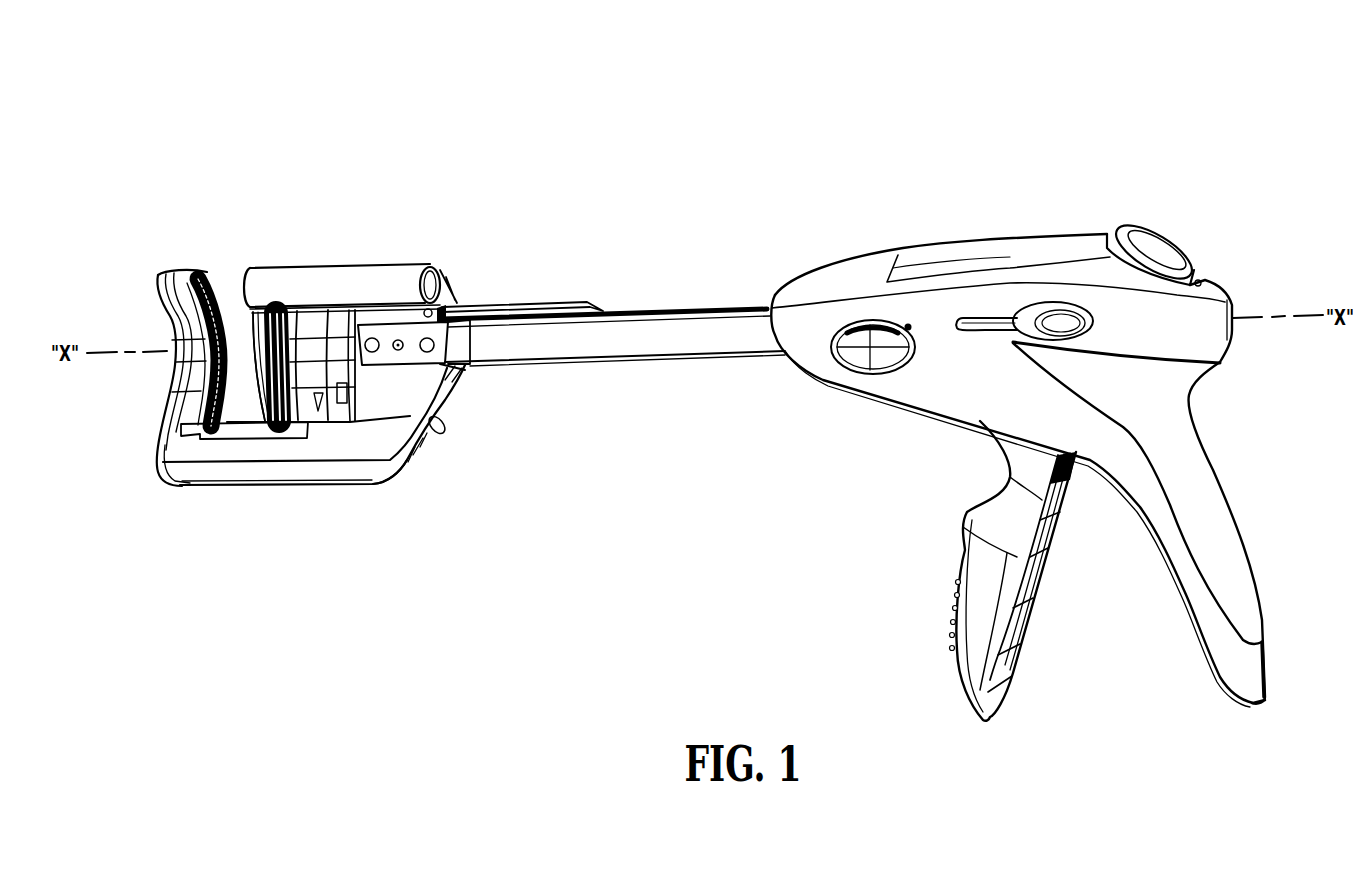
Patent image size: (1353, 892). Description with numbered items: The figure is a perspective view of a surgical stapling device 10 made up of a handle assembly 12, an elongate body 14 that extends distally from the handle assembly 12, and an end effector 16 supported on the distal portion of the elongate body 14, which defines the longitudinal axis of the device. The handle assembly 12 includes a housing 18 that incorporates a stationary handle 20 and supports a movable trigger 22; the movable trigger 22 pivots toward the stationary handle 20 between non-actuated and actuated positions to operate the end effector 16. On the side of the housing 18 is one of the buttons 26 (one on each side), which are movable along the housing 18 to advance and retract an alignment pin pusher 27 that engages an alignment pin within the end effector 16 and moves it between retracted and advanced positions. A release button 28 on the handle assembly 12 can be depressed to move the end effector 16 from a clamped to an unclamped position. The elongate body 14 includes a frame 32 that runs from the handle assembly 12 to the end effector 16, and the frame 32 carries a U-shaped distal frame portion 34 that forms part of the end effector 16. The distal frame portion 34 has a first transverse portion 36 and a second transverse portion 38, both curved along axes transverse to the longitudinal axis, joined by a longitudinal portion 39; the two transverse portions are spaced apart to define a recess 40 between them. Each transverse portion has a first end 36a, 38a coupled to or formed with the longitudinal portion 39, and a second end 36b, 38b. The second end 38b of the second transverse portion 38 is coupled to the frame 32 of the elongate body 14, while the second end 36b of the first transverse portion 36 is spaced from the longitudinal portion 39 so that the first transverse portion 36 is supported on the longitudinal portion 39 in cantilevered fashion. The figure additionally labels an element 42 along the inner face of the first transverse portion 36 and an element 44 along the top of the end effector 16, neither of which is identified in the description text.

The stapling device 10 is at (721, 144).
The handle assembly 12 is at (1039, 454).
The elongate body 14 is at (613, 325).
The end effector 16 is at (320, 391).
The housing 18 is at (913, 393).
The stationary handle 20 is at (1230, 583).
The movable trigger 22 is at (993, 673).
The buttons 26 is at (1063, 327).
The alignment pin pusher 27 is at (504, 312).
The release button 28 is at (1160, 253).
The frame 32 is at (607, 337).
The distal frame portion 34 is at (297, 494).
The first transverse portion 36 is at (200, 352).
The first end of first transverse portion 36a is at (173, 433).
The second end of first transverse portion 36b is at (173, 292).
The second transverse portion 38 is at (453, 446).
The first end of second transverse portion 38a is at (403, 478).
The second end of second transverse portion 38b is at (470, 375).
The longitudinal portion 39 is at (213, 478).
The recess 40 is at (247, 400).
The anvil surface 42 is at (197, 268).
The alignment pin 44 is at (341, 268).